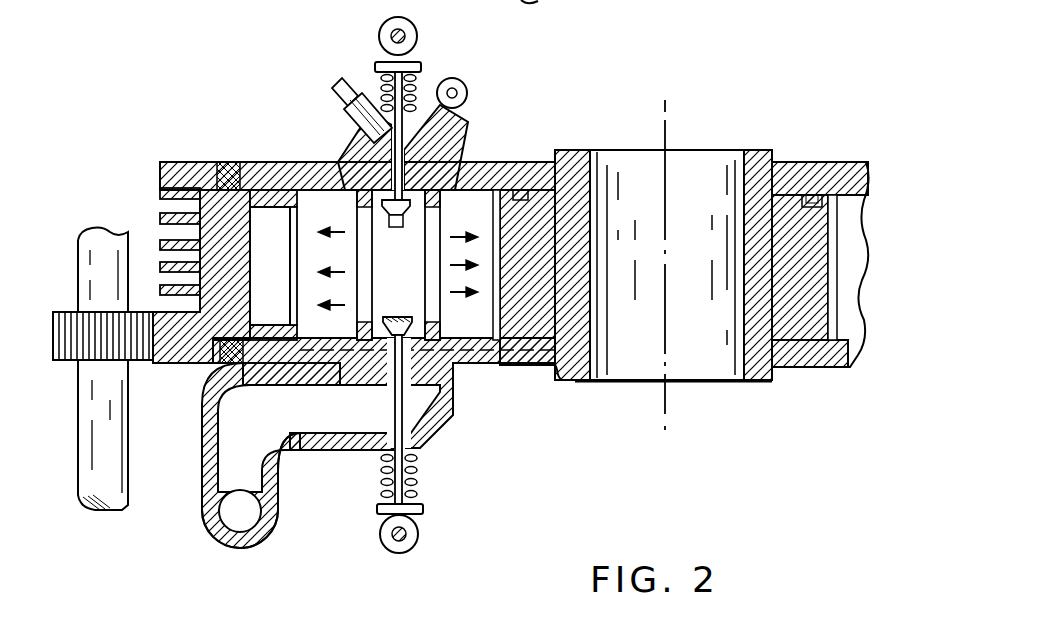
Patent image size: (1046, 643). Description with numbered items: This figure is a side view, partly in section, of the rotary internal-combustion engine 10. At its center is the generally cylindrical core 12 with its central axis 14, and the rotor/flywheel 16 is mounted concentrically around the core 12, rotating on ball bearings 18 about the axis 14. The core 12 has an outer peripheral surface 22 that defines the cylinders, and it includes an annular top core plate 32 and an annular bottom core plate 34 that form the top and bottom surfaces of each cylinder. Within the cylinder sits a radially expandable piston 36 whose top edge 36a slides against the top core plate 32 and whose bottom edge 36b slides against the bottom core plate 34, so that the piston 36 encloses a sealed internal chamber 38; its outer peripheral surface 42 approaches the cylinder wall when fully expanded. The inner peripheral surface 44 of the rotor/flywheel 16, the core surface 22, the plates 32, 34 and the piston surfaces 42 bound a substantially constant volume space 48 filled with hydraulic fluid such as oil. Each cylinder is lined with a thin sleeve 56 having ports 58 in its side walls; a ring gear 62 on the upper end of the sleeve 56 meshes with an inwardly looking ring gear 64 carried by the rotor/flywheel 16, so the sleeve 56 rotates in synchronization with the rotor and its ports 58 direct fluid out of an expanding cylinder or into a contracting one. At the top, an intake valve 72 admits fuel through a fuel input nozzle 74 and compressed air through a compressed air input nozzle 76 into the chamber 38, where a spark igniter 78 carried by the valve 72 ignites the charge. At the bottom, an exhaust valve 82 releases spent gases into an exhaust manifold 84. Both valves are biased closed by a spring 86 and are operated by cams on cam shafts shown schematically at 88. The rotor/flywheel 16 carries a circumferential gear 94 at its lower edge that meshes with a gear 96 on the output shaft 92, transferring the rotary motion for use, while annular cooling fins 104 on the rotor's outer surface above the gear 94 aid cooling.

The internal-combustion engine 10 is at (518, 438).
The core 12 is at (584, 384).
The central axis 14 is at (668, 131).
The rotor/flywheel 16 is at (177, 350).
The ball bearings 18 is at (229, 160).
The outer peripheral surface 22 is at (510, 263).
The top core plate 32 is at (281, 160).
The bottom core plate 34 is at (483, 366).
The piston 36 is at (455, 182).
The top edge 36a is at (339, 179).
The bottom edge 36b is at (445, 329).
The internal chamber 38 is at (430, 241).
The outer peripheral surface 42 is at (352, 228).
The inner peripheral surface 44 is at (253, 268).
The substantially constant volume space 48 is at (259, 300).
The sleeve 56 is at (505, 300).
The ports 58 is at (296, 266).
The ring gear 62 is at (278, 186).
The ring gear 64 is at (211, 188).
The intake valve 72 is at (407, 110).
The fuel input nozzle 74 is at (339, 86).
The compressed air input nozzle 76 is at (467, 90).
The spark igniter 78 is at (398, 232).
The exhaust valve 82 is at (392, 412).
The exhaust manifold 84 is at (333, 452).
The spring 86 is at (381, 79).
The cam shafts 88 is at (409, 33).
The output shaft 92 is at (128, 450).
The circumferential gear 94 is at (149, 364).
The gear 96 is at (62, 363).
The cooling fins 104 is at (158, 216).